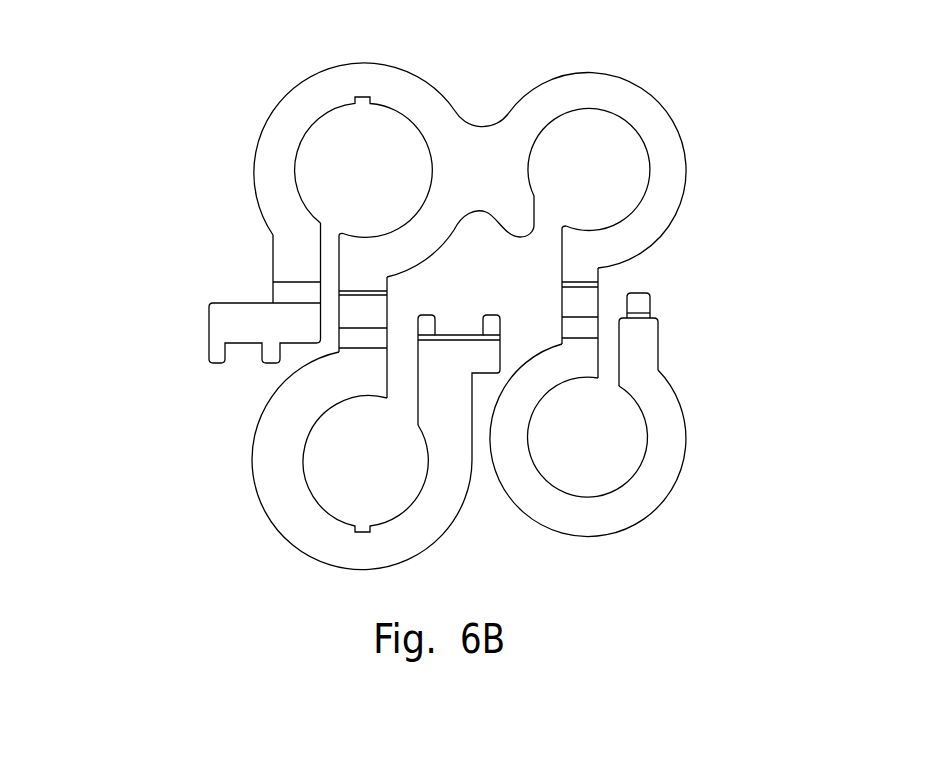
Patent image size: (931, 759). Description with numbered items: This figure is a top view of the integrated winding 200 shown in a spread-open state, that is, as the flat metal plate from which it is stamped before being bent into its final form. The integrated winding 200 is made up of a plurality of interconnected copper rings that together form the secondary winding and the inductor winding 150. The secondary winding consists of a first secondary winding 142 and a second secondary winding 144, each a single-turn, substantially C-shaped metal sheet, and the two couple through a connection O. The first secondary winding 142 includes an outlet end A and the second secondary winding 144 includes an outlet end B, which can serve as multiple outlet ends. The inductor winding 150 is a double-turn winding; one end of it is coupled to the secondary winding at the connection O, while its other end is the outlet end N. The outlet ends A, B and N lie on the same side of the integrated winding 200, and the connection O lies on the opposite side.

The integrated winding 200 is at (130, 64).
The first secondary winding 142 is at (294, 112).
The second secondary winding 144 is at (270, 483).
The inductor winding 150 is at (655, 128).
The connection O is at (480, 143).
The outlet end A is at (273, 353).
The outlet end B is at (430, 323).
The outlet end N is at (643, 305).